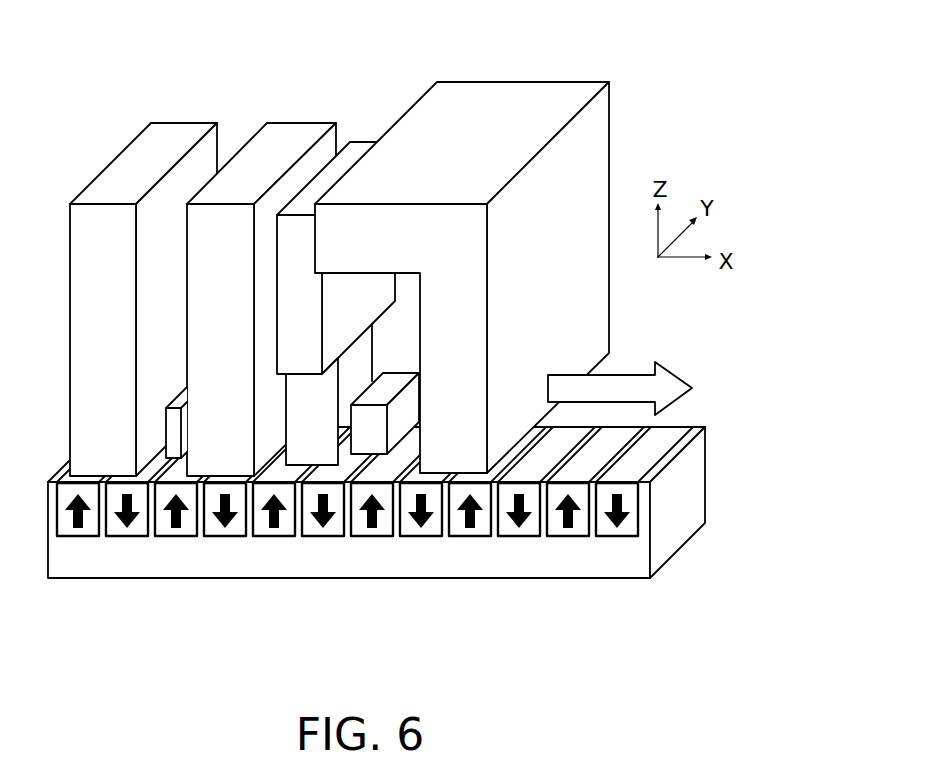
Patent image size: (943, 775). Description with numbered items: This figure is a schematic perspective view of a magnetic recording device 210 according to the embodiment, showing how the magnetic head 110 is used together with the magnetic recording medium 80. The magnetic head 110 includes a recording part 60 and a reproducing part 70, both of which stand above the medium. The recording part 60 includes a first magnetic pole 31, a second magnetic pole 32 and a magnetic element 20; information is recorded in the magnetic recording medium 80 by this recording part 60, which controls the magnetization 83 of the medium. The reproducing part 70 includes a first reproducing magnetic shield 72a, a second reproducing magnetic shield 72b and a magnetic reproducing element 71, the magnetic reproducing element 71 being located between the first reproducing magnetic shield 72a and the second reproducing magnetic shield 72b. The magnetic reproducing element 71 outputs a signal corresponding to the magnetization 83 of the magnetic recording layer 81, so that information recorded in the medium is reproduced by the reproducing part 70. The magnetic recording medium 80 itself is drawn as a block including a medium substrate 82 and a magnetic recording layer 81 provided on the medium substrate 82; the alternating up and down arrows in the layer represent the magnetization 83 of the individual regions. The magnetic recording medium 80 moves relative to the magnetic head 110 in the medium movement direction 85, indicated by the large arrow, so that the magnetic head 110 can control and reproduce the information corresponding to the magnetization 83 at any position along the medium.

The magnetic recording device 210 is at (433, 351).
The magnetic head 110 is at (385, 358).
The reproducing part 70 is at (206, 250).
The first reproducing magnetic shield 72a is at (169, 138).
The magnetic reproducing element 71 is at (171, 400).
The second reproducing magnetic shield 72b is at (290, 138).
The recording part 60 is at (437, 388).
The first magnetic pole 31 is at (316, 446).
The magnetic element 20 is at (369, 432).
The second magnetic pole 32 is at (461, 449).
The medium movement direction 85 is at (632, 375).
The magnetic recording medium 80 is at (376, 552).
The magnetic recording layer 81 is at (73, 540).
The medium substrate 82 is at (118, 553).
The magnetization 83 is at (176, 563).